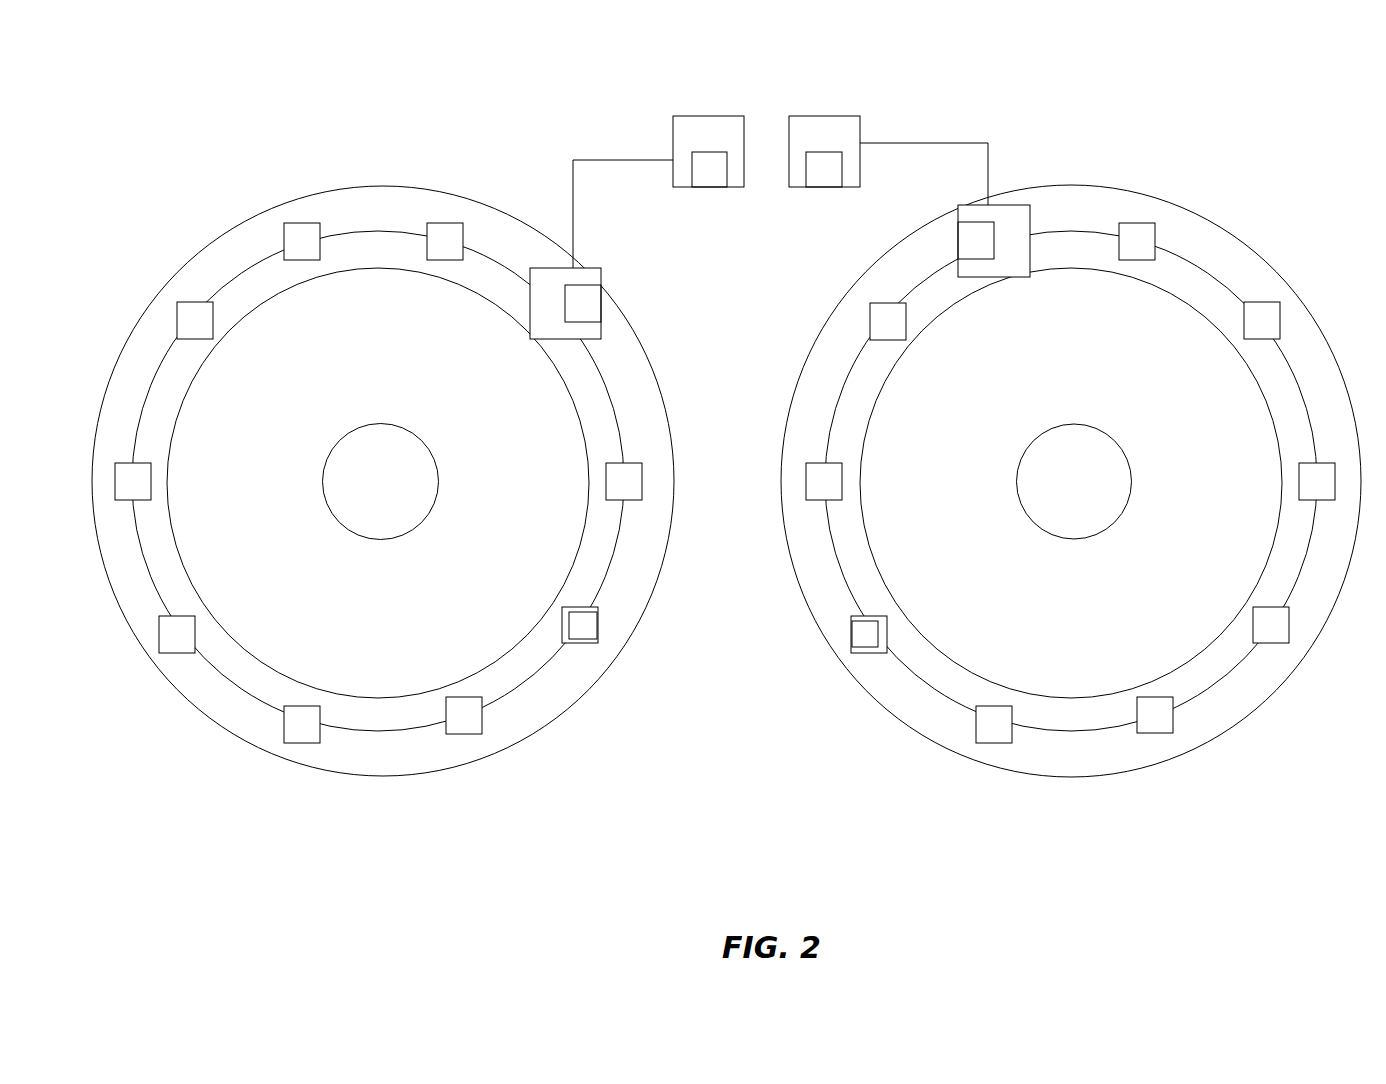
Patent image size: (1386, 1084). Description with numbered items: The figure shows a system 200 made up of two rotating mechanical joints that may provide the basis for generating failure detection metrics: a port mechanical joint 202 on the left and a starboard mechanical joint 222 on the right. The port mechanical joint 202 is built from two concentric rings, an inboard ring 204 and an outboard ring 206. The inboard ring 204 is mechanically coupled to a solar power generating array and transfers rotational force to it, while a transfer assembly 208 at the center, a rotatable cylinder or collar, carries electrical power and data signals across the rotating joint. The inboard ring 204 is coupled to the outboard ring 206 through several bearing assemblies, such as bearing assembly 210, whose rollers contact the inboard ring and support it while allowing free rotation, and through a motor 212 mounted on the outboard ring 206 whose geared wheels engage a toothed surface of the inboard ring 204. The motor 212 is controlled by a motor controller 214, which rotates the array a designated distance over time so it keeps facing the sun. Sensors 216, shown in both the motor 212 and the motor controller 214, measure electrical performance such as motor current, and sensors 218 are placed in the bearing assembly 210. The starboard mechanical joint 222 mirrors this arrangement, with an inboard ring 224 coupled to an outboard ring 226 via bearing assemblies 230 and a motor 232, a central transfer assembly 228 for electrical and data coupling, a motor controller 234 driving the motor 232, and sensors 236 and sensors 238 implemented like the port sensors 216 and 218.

The system 200 is at (1259, 908).
The port mechanical joint 202 is at (190, 148).
The inboard ring 204 is at (376, 732).
The outboard ring 206 is at (240, 738).
The transfer assembly 208 is at (416, 522).
The bearing assembly 210 is at (468, 732).
The motor 212 is at (548, 268).
The motor controller 214 is at (674, 142).
The sensors 216 is at (600, 303).
The sensors 218 is at (580, 625).
The starboard mechanical joint 222 is at (1301, 196).
The inboard ring 224 is at (1073, 732).
The outboard ring 226 is at (888, 708).
The transfer assembly 228 is at (1055, 537).
The bearing assemblies 230 is at (1155, 733).
The motor 232 is at (1030, 213).
The motor controller 234 is at (860, 123).
The sensors 236 is at (962, 241).
The sensors 238 is at (862, 637).